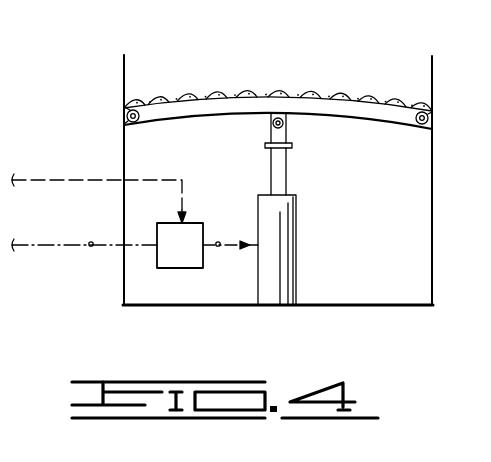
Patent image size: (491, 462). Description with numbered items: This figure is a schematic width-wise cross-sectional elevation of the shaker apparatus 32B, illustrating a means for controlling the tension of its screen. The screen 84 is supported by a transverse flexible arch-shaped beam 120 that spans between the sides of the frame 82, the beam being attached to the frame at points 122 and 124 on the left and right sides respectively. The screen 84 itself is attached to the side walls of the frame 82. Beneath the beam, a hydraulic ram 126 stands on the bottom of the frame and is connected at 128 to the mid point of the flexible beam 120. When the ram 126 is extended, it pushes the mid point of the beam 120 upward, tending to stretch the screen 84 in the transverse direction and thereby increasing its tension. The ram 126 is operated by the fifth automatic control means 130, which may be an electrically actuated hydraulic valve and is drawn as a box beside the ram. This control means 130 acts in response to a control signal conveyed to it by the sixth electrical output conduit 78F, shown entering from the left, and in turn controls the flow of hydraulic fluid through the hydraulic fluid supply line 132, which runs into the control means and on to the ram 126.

The shaker apparatus 32B is at (396, 278).
The frame 82 is at (124, 65).
The transverse flexible arch-shaped beam 120 is at (340, 108).
The screen 84 is at (315, 90).
The beam attachment point 122 is at (127, 113).
The beam attachment point 124 is at (430, 122).
The ram connection point 128 is at (273, 117).
The hydraulic ram 126 is at (283, 225).
The fifth automatic control means 130 is at (196, 254).
The sixth electrical output conduit 78F is at (68, 180).
The hydraulic fluid supply line 132 is at (90, 250).